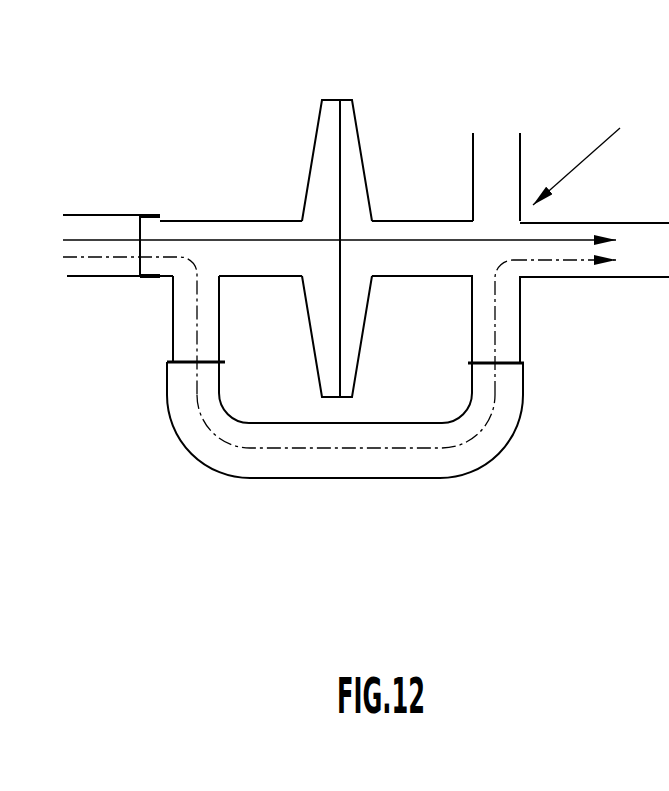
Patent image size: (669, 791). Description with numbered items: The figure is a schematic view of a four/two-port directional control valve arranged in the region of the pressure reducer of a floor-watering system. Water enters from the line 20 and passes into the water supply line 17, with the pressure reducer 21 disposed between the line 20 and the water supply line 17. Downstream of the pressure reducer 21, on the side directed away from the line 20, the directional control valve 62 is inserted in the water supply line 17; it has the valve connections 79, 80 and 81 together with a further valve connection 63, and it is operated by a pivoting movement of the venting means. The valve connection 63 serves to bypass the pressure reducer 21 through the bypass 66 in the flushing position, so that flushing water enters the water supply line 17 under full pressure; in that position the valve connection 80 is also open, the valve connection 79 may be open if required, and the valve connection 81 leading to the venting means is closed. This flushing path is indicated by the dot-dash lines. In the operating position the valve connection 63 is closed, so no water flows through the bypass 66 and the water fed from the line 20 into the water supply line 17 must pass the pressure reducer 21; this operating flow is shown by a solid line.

The line 20 is at (92, 213).
The water supply line 17 is at (415, 221).
The pressure reducer 21 is at (348, 117).
The valve connection 79 is at (435, 262).
The valve connection 81 is at (500, 143).
The directional control valve 62 is at (585, 155).
The valve connection 80 is at (573, 267).
The valve connection 63 is at (503, 352).
The bypass 66 is at (425, 468).